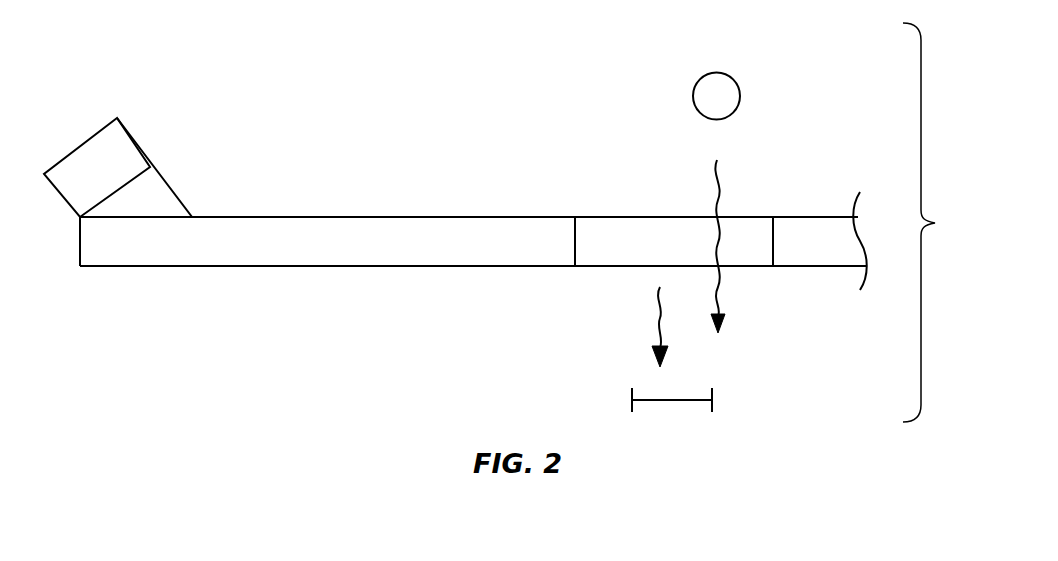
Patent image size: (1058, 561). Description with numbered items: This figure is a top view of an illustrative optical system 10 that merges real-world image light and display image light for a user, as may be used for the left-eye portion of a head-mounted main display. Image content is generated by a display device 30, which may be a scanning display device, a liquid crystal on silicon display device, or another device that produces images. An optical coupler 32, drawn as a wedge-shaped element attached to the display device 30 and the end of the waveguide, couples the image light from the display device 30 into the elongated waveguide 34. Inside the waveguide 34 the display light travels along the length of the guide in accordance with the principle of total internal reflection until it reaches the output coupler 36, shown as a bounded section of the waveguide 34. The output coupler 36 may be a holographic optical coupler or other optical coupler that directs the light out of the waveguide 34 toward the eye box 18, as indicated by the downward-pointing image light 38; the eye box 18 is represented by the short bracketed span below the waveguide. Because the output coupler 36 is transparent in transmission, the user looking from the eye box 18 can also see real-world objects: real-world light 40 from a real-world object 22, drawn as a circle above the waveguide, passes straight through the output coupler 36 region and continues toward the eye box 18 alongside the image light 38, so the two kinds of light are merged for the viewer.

The display system 10 is at (933, 222).
The eye box 18 is at (713, 398).
The real-world object 22 is at (693, 97).
The display device 30 is at (127, 143).
The optical coupler 32 is at (163, 193).
The waveguide 34 is at (287, 255).
The output coupler 36 is at (752, 257).
The image light 38 is at (660, 327).
The real-world light 40 is at (723, 182).